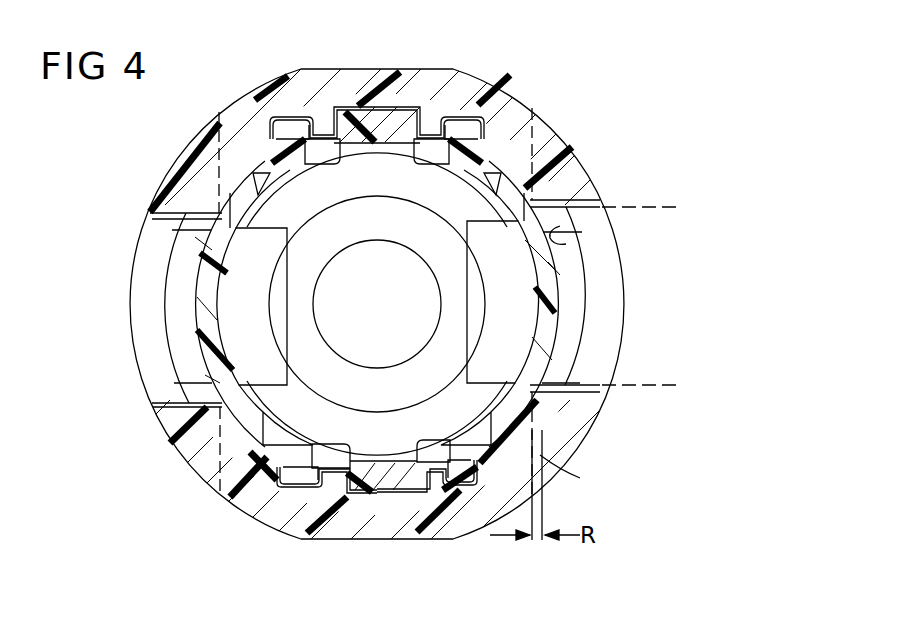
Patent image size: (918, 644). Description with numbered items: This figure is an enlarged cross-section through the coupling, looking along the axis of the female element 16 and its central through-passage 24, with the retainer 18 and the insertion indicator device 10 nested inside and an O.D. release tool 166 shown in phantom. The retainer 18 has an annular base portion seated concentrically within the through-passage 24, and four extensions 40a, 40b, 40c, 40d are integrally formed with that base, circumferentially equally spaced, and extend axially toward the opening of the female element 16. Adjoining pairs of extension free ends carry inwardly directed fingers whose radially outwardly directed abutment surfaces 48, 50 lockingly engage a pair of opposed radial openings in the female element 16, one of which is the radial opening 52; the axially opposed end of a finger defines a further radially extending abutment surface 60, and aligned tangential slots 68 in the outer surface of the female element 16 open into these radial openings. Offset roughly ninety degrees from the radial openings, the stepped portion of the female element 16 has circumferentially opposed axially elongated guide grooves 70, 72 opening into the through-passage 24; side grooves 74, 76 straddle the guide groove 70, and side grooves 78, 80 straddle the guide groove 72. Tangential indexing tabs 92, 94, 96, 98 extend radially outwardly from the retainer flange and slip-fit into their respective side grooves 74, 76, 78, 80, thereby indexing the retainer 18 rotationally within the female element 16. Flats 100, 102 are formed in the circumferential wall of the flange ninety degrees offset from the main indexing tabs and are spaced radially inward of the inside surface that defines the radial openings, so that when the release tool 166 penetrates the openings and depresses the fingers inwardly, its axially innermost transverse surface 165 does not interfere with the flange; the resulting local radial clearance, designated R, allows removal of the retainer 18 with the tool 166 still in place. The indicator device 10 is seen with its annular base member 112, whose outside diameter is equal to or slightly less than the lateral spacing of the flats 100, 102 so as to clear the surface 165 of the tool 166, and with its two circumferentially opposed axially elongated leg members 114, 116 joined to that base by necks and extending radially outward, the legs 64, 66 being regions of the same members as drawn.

The insertion indicator device 10 is at (377, 418).
The female element 16 is at (590, 178).
The retainer 18 is at (173, 374).
The through-passage 24 is at (377, 304).
The extension 40a is at (257, 165).
The extension 40b is at (500, 150).
The extension 40c is at (486, 455).
The extension 40d is at (262, 446).
The abutment surface 48 is at (578, 300).
The abutment surface 50 is at (173, 278).
The radial opening 52 is at (138, 323).
The abutment surface 60 is at (204, 138).
The pole piece 64 is at (503, 302).
The pole piece 66 is at (252, 306).
The tangential slot 68 is at (553, 457).
The guide groove 70 is at (400, 112).
The guide groove 72 is at (418, 483).
The side groove 74 is at (281, 116).
The side groove 76 is at (448, 116).
The side groove 78 is at (300, 490).
The side groove 80 is at (472, 490).
The tangential indexing tab 92 is at (463, 485).
The tangential indexing tab 94 is at (466, 128).
The tangential indexing tab 96 is at (310, 490).
The tangential indexing tab 98 is at (306, 116).
The flat 100 is at (150, 214).
The flat 102 is at (604, 205).
The base member 112 is at (377, 282).
The leg member 114 is at (372, 110).
The leg member 116 is at (388, 494).
The transverse surface 165 is at (562, 234).
The O.D. release tool 166 is at (650, 383).